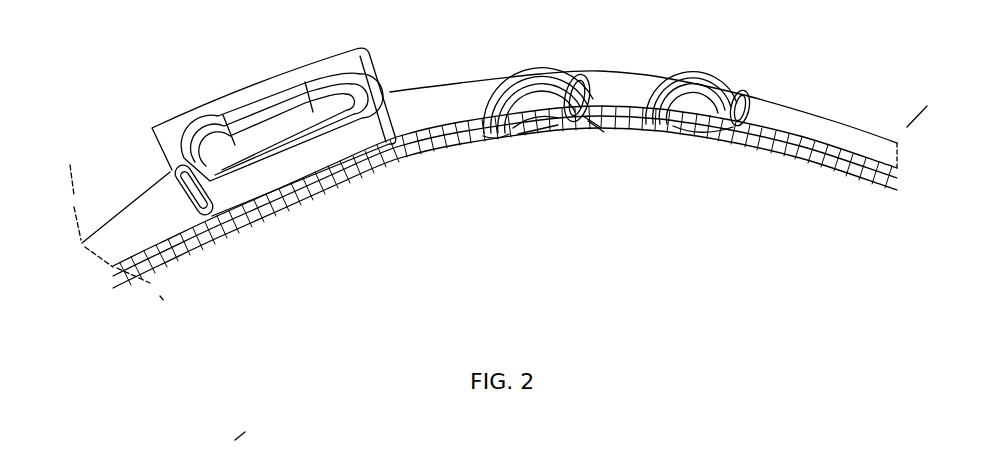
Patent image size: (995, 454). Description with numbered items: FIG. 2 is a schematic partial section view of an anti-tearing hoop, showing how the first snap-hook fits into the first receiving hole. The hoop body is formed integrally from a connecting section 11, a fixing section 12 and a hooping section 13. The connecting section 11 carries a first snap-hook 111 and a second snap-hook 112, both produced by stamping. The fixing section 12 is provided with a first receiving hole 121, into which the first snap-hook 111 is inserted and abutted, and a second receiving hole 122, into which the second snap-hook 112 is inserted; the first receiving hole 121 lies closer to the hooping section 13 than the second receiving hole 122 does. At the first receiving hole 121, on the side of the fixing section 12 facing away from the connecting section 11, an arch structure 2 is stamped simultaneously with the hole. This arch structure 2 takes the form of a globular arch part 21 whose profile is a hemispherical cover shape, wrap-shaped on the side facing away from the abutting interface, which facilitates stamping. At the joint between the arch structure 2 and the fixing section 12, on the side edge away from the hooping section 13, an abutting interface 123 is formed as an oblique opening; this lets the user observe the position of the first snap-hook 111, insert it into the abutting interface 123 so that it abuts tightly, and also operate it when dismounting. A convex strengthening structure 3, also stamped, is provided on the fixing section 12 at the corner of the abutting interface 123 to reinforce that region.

The arch structure 2 is at (595, 101).
The convex strengthening structure 3 is at (592, 124).
The connecting section 11 is at (858, 185).
The fixing section 12 is at (826, 125).
The hooping section 13 is at (333, 63).
The globular arch part 21 is at (524, 68).
The first snap-hook 111 is at (541, 112).
The second snap-hook 112 is at (708, 125).
The first receiving hole 121 is at (490, 128).
The second receiving hole 122 is at (674, 122).
The abutting interface 123 is at (567, 74).